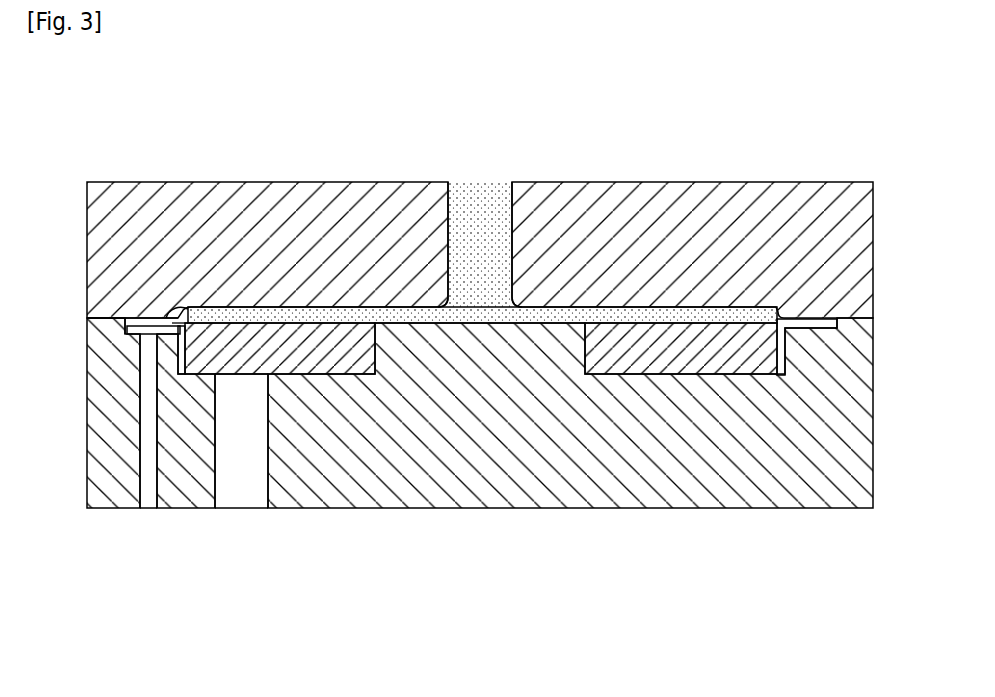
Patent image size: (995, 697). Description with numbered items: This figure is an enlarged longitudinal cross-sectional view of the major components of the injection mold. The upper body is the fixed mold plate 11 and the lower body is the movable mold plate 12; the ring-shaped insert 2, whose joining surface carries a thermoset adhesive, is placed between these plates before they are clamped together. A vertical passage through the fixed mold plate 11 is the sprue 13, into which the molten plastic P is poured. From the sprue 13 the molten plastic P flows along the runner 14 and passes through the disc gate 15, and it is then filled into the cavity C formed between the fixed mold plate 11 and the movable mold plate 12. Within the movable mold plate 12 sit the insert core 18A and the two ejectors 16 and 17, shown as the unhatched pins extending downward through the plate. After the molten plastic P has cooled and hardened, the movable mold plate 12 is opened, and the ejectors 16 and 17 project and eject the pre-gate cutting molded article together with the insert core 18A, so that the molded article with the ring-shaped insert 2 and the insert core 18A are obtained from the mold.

The ring-shaped insert 2 is at (138, 352).
The fixed mold plate 11 is at (757, 205).
The movable mold plate 12 is at (765, 490).
The sprue 13 is at (511, 226).
The runner 14 is at (393, 313).
The disc gate 15 is at (196, 307).
The ejector 16 is at (143, 477).
The ejector 17 is at (221, 478).
The insert core 18A is at (338, 363).
The cavity C is at (135, 311).
The molten plastic P is at (462, 198).